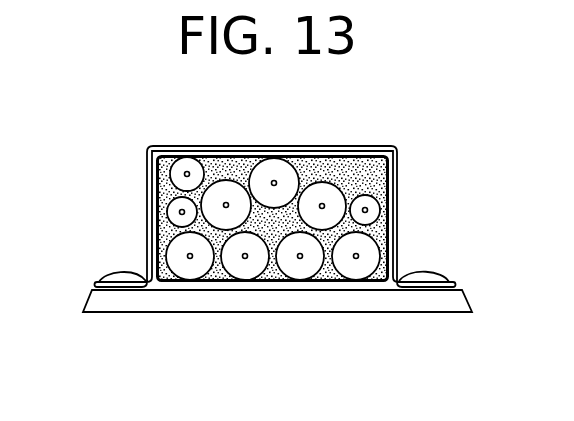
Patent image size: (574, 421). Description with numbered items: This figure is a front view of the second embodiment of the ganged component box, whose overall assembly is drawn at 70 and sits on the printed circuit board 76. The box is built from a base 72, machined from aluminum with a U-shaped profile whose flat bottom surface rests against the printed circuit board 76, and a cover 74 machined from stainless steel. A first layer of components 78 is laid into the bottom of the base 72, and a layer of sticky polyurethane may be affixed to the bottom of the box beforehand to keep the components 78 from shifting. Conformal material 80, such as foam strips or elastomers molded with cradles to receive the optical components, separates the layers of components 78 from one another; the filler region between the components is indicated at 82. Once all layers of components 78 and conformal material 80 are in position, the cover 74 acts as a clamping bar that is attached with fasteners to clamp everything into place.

The electrical component assembly 70 is at (90, 194).
The base 72 is at (348, 290).
The cover 74 is at (330, 146).
The printed circuit board 76 is at (435, 312).
The components 78 is at (312, 189).
The conformal material 80 is at (372, 208).
The insulating filler material 82 is at (263, 163).